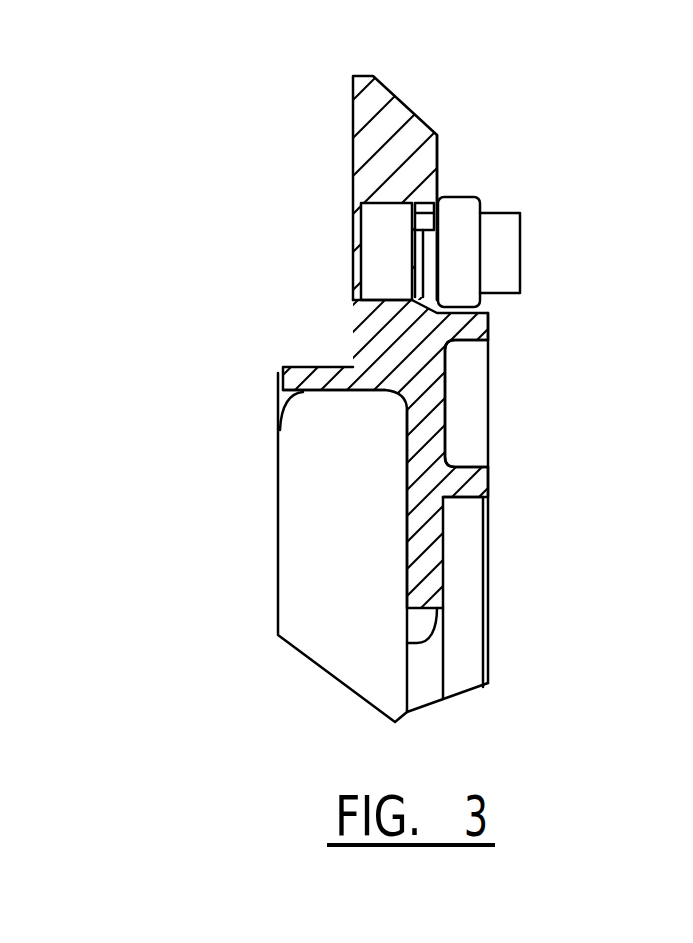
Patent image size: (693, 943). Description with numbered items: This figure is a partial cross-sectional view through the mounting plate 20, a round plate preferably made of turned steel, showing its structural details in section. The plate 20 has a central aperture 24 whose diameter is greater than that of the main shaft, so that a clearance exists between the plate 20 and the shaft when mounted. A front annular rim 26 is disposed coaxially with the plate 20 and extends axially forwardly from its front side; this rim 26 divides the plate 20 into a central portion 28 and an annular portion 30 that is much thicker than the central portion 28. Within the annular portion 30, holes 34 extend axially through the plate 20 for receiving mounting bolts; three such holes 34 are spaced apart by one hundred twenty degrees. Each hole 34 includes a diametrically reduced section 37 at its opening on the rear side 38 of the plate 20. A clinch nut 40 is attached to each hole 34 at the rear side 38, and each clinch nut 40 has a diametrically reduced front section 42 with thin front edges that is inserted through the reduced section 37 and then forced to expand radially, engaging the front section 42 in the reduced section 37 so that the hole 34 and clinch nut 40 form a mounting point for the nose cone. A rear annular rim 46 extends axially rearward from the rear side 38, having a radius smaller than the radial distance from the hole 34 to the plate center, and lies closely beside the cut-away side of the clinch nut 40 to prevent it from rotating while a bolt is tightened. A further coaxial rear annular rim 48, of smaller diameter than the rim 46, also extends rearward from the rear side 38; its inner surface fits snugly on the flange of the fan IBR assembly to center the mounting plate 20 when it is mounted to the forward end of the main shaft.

The mounting plate 20 is at (278, 528).
The central aperture 24 is at (407, 643).
The front annular rim 26 is at (280, 430).
The central portion 28 is at (407, 482).
The annular portion 30 is at (352, 135).
The hole 34 is at (357, 287).
The diametrically reduced section 37 is at (422, 203).
The rear side 38 is at (437, 200).
The clinch nut 40 is at (468, 197).
The diametrically reduced front section 42 is at (415, 253).
The rear annular rim 46 is at (488, 328).
The rear annular rim 48 is at (490, 483).